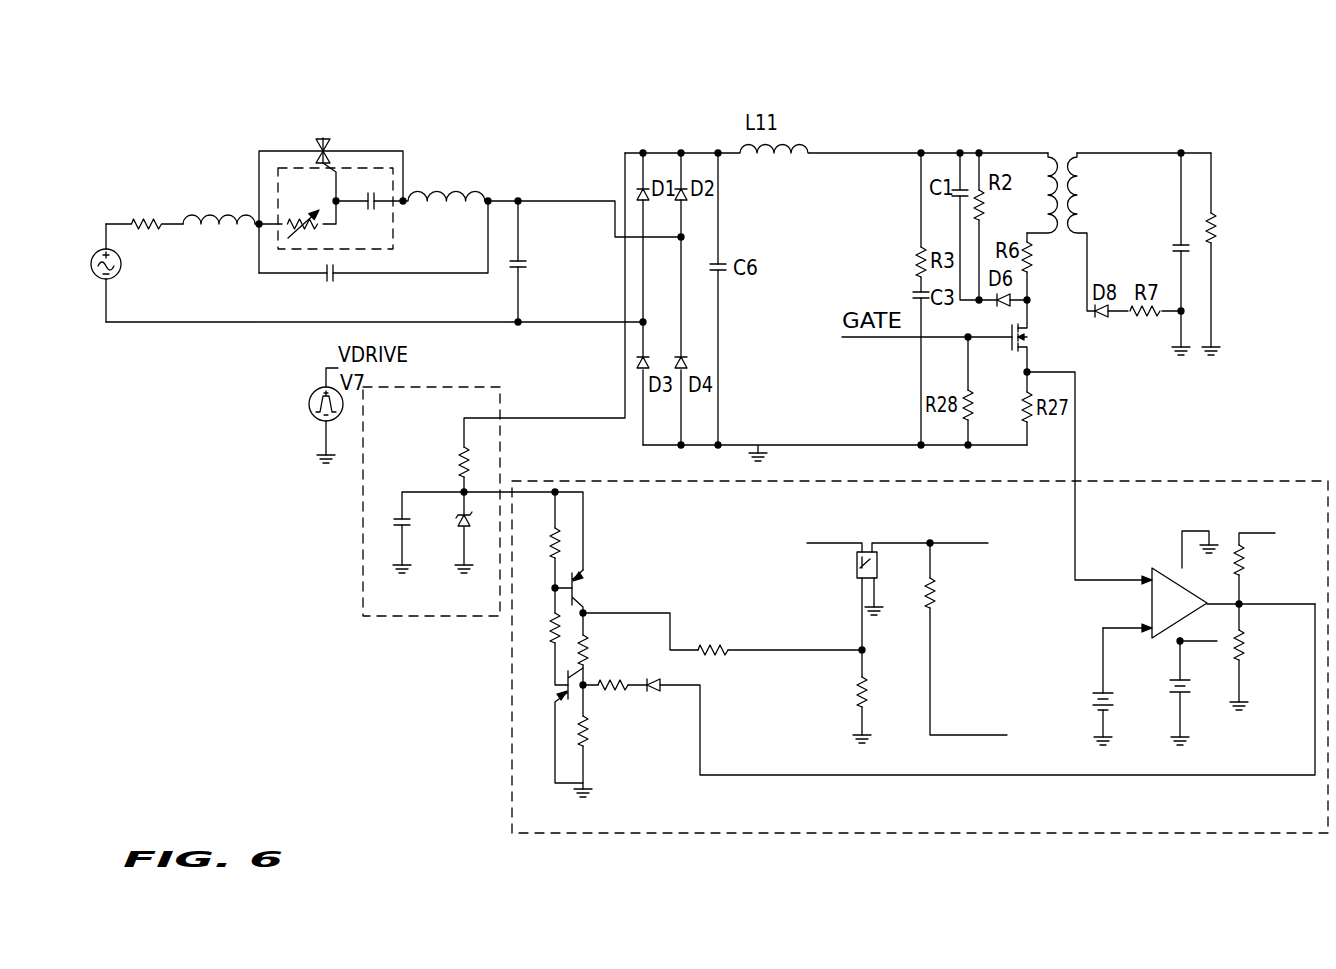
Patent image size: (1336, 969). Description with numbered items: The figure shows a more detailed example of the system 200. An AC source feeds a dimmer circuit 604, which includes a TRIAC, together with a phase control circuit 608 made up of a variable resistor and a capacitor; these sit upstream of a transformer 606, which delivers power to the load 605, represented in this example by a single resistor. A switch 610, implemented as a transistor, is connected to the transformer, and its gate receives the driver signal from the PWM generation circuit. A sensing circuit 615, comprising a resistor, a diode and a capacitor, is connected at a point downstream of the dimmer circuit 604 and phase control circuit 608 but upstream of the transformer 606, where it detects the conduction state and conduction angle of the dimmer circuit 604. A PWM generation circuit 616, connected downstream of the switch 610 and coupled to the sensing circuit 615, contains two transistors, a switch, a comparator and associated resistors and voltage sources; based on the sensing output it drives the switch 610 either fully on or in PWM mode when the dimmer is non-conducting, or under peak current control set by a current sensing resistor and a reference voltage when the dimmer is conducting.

The system 200 is at (138, 84).
The dimmer circuit 604 is at (327, 104).
The load 605 is at (1223, 130).
The transformer 606 is at (1084, 138).
The phase control circuit 608 is at (393, 168).
The switch 610 is at (1050, 338).
The sensing circuit 615 is at (362, 590).
The PWM generation circuit 616 is at (510, 768).